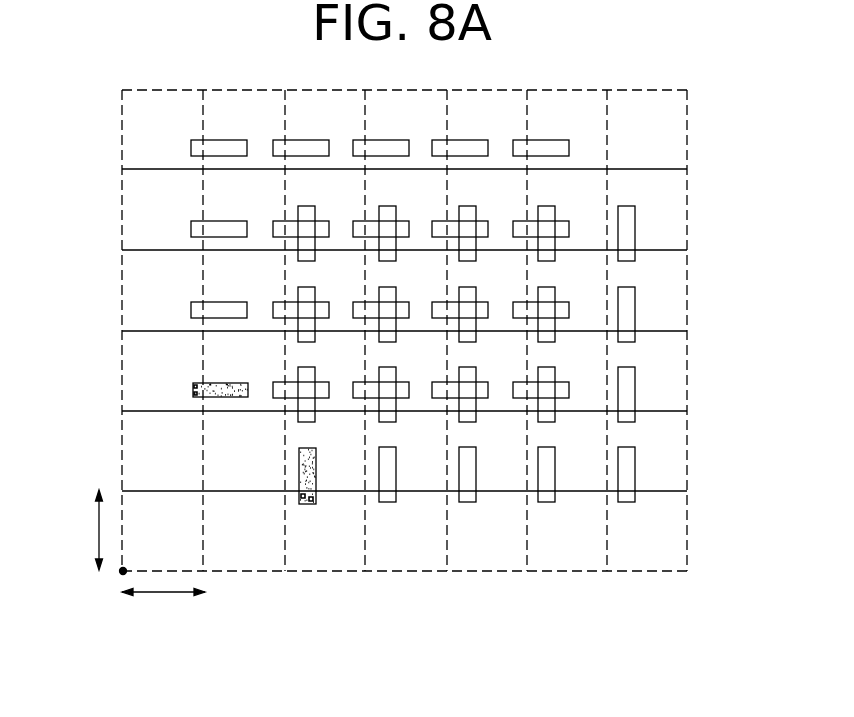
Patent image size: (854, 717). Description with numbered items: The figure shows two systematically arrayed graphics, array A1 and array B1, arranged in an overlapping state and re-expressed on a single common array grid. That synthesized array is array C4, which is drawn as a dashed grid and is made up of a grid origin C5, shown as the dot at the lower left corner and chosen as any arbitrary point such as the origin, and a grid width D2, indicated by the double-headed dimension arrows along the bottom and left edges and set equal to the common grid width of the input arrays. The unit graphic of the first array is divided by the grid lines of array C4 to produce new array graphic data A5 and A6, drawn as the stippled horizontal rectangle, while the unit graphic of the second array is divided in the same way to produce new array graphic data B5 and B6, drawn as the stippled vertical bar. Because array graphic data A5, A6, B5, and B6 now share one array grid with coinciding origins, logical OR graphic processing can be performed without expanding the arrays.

The array graphic data A5 is at (193, 390).
The array graphic data A6 is at (238, 398).
The array graphic data B5 is at (298, 463).
The array graphic data B6 is at (311, 503).
The array C4 is at (688, 307).
The grid origin C5 is at (120, 572).
The grid width D2 is at (98, 531).